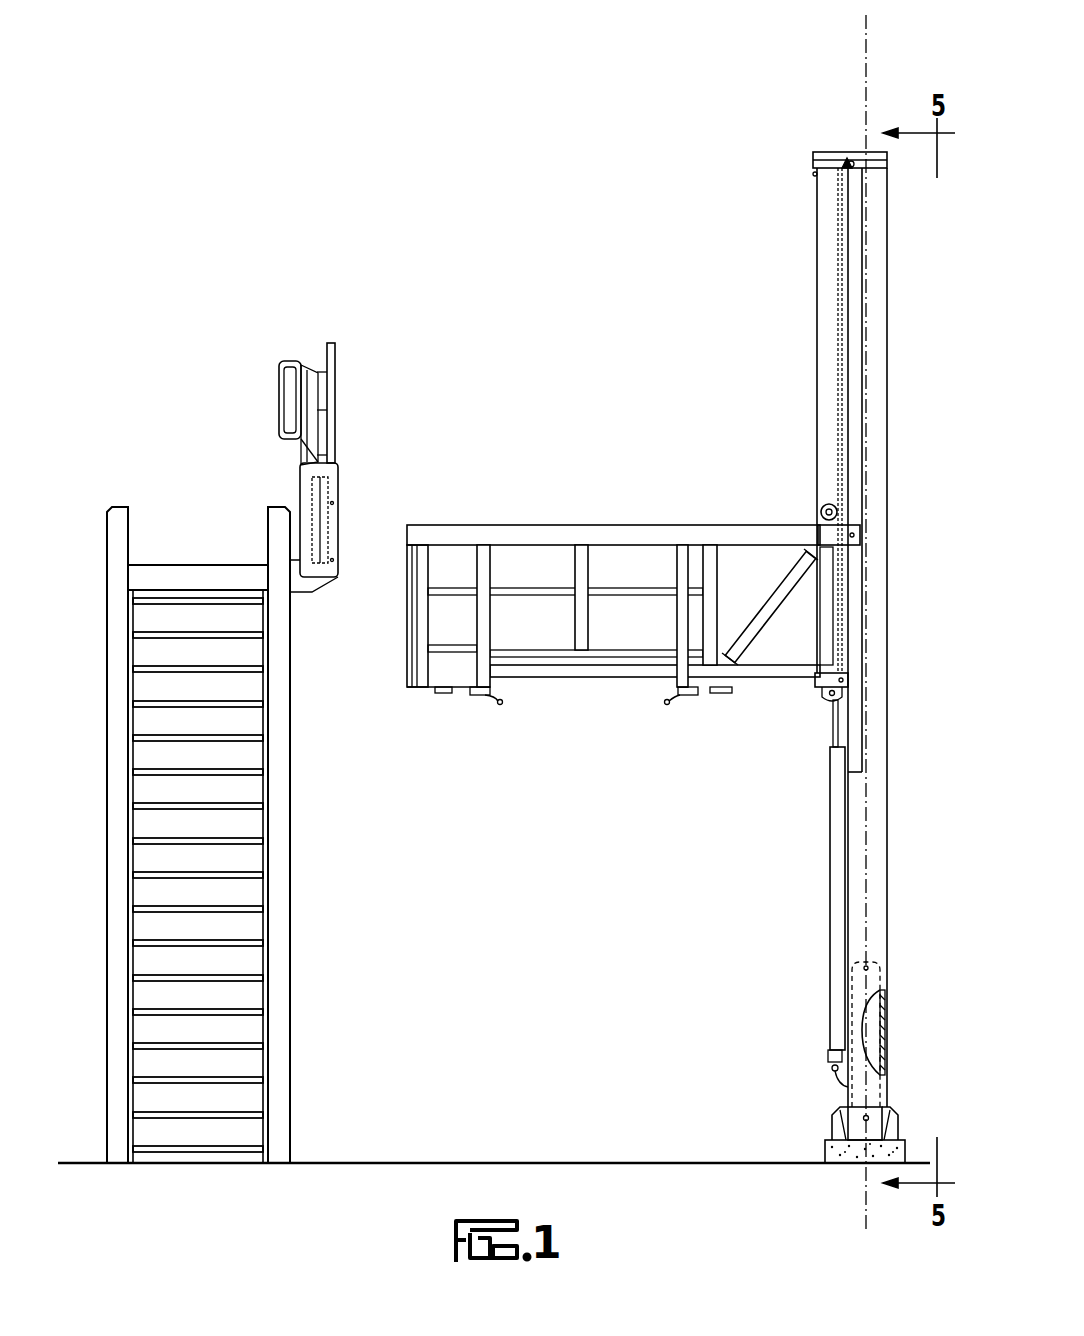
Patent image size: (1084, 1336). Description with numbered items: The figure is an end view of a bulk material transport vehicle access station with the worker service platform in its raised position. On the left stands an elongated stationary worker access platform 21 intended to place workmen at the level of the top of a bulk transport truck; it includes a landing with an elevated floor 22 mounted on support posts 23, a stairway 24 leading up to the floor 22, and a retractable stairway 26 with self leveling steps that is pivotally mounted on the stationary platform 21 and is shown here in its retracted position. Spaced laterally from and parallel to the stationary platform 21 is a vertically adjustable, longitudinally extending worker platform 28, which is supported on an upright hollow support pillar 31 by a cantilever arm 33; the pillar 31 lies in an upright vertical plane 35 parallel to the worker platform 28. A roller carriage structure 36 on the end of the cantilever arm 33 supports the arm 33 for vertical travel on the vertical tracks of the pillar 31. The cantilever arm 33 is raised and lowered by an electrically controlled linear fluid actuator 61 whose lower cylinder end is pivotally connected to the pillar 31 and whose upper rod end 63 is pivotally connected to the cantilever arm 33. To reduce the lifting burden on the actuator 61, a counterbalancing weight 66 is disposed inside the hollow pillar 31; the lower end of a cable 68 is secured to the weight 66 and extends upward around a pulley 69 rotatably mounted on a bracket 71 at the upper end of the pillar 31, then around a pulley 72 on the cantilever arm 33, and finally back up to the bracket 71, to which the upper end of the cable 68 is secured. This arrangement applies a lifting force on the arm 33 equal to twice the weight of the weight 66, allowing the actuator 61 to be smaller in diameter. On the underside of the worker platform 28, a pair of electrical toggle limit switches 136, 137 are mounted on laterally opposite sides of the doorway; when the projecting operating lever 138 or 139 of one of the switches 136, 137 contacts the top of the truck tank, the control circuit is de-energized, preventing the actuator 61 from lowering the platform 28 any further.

The stationary worker access platform 21 is at (197, 835).
The floor 22 is at (215, 565).
The support posts 23 is at (108, 805).
The stairway 24 is at (160, 861).
The retractable stairway 26 is at (340, 538).
The worker platform 28 is at (633, 619).
The support pillar 31 is at (852, 622).
The cantilever arm 33 is at (757, 525).
The vertical plane 35 is at (866, 62).
The roller carriage structure 36 is at (822, 630).
The linear fluid actuator 61 is at (828, 926).
The rod end 63 is at (833, 731).
The counterbalancing weight 66 is at (875, 1025).
The cable 68 is at (817, 335).
The pulley 69 is at (850, 152).
The bracket 71 is at (825, 152).
The pulley 72 is at (826, 504).
The electrical toggle limit switch 136 is at (477, 697).
The electrical toggle limit switch 137 is at (690, 697).
The operating lever 138 is at (492, 706).
The operating lever 139 is at (668, 707).